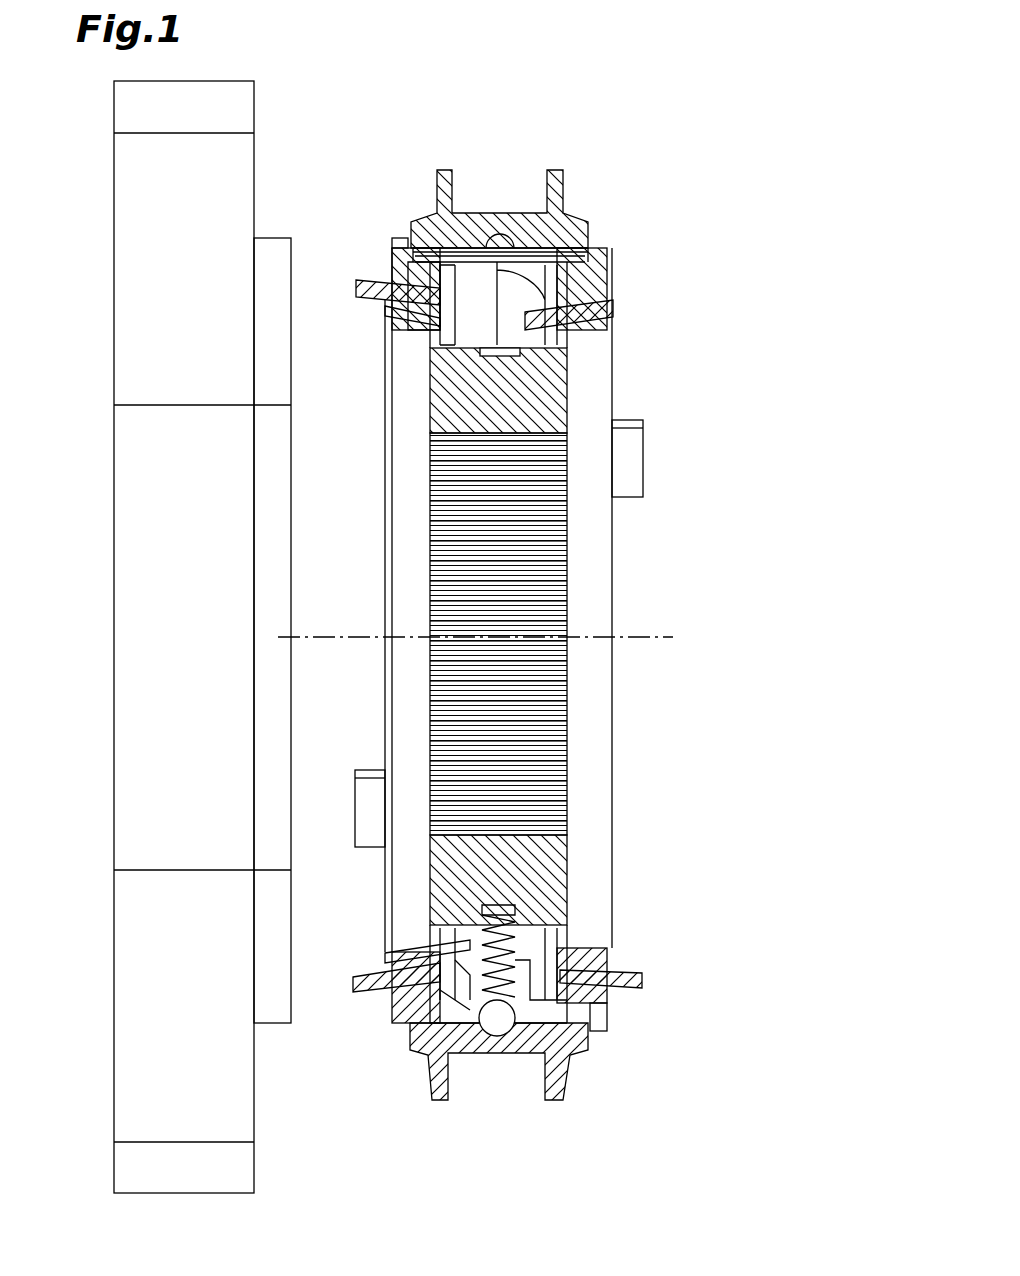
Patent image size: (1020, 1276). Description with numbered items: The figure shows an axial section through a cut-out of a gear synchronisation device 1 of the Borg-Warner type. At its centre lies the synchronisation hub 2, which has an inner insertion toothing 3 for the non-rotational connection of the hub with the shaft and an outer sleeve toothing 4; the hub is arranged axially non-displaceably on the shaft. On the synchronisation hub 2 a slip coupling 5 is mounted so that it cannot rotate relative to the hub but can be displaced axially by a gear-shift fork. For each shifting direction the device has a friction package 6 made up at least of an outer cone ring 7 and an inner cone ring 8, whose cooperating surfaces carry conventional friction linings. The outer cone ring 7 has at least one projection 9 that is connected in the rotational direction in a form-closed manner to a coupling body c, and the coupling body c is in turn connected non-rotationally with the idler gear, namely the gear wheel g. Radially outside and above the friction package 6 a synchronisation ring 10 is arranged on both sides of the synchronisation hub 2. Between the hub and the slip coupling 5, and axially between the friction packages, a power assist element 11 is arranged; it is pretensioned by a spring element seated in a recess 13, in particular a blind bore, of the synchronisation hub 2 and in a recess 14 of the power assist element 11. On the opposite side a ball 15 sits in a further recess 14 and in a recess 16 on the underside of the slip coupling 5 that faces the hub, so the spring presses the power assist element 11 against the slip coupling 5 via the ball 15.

The gear synchronisation device 1 is at (722, 200).
The synchronisation hub 2 is at (554, 380).
The inner insertion toothing 3 is at (542, 500).
The outer sleeve toothing 4 is at (543, 265).
The slip coupling 5 is at (575, 170).
The friction package 6 is at (342, 290).
The outer cone ring 7 is at (373, 268).
The inner cone ring 8 is at (378, 310).
The projection 9 is at (648, 450).
The synchronisation ring 10 is at (386, 236).
The power assist element 11 is at (462, 990).
The recess 13 is at (532, 914).
The recess 14 is at (522, 1007).
The ball 15 is at (488, 1032).
The recess 16 is at (520, 240).
The gear wheel g is at (96, 205).
The coupling body c is at (282, 226).